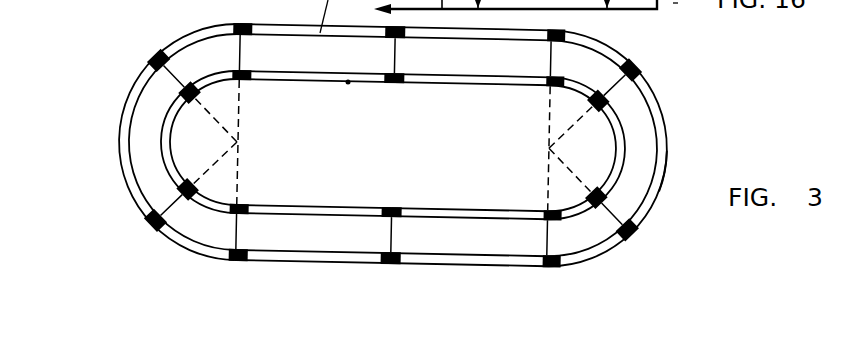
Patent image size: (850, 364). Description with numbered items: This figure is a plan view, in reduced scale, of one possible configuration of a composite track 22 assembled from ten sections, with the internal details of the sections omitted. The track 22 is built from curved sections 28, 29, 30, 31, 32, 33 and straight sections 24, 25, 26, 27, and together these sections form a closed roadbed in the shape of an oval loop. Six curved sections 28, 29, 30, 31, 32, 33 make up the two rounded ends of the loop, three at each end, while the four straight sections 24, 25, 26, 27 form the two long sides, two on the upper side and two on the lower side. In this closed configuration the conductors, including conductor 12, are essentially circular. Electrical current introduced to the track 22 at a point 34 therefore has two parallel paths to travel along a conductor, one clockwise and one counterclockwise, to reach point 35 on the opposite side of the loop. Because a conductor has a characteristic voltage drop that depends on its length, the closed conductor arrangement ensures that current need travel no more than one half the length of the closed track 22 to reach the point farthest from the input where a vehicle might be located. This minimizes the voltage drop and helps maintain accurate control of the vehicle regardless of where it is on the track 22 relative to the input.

The conductor 12 is at (348, 82).
The track 22 is at (683, 168).
The straight section 24 is at (305, 81).
The straight section 25 is at (462, 87).
The straight section 26 is at (473, 211).
The straight section 27 is at (310, 206).
The curved section 28 is at (606, 51).
The curved section 29 is at (661, 126).
The curved section 30 is at (628, 230).
The curved section 31 is at (151, 218).
The curved section 32 is at (120, 118).
The curved section 33 is at (170, 51).
The point 34 is at (256, 17).
The point 35 is at (550, 268).